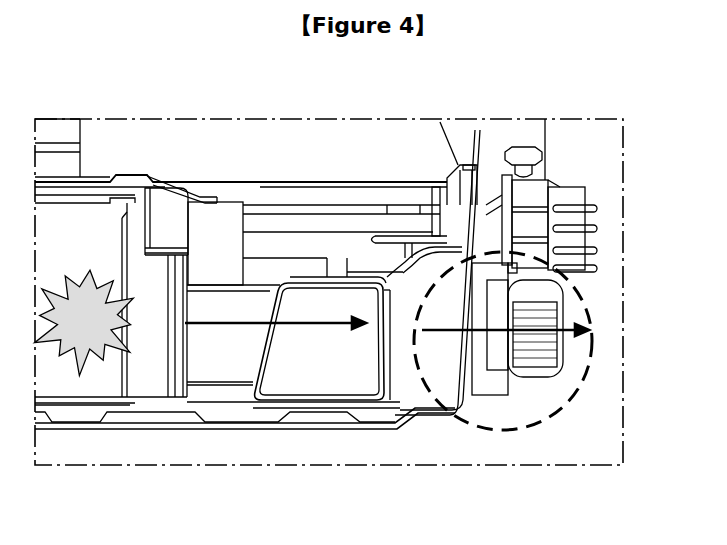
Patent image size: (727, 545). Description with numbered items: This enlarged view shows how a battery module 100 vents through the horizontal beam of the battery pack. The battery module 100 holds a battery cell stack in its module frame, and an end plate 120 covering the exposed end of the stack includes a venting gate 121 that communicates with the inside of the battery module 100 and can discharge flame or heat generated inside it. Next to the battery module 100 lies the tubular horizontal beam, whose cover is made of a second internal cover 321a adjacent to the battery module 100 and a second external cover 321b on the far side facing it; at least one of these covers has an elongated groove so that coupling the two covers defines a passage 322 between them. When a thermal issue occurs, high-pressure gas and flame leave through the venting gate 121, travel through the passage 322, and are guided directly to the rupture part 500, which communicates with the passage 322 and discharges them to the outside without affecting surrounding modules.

The battery module 100 is at (65, 383).
The end plate 120 is at (150, 383).
The venting gate 121 is at (222, 360).
The second internal cover 321a is at (292, 396).
The passage 322 is at (362, 380).
The second external cover 321b is at (410, 412).
The rupture part 500 is at (543, 307).